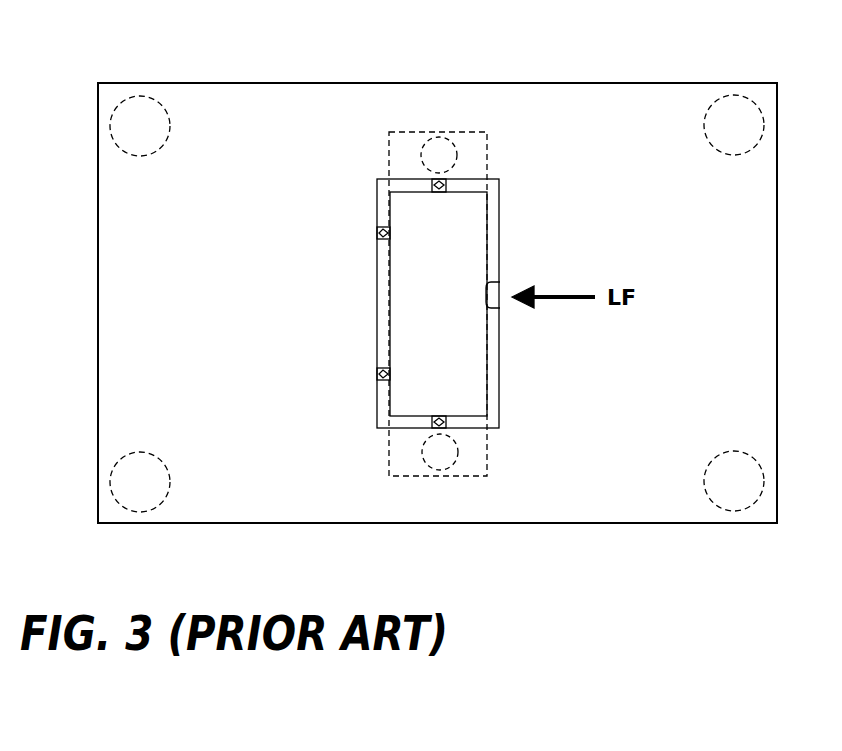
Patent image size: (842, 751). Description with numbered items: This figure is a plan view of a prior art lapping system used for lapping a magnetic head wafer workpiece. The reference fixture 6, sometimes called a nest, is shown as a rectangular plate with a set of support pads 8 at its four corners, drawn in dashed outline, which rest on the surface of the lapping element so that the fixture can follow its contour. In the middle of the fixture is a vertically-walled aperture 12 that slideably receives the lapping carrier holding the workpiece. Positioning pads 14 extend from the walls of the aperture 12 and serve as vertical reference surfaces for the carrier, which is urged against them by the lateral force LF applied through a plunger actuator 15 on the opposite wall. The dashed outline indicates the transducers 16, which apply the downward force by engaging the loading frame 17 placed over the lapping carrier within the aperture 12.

The reference fixture 6 is at (197, 83).
The support pads 8 is at (133, 122).
The vertically-walled aperture 12 is at (503, 188).
The positioning pads 14 is at (432, 184).
The plunger actuator 15 is at (500, 274).
The transducers 16 is at (440, 150).
The loading frame 17 is at (427, 313).